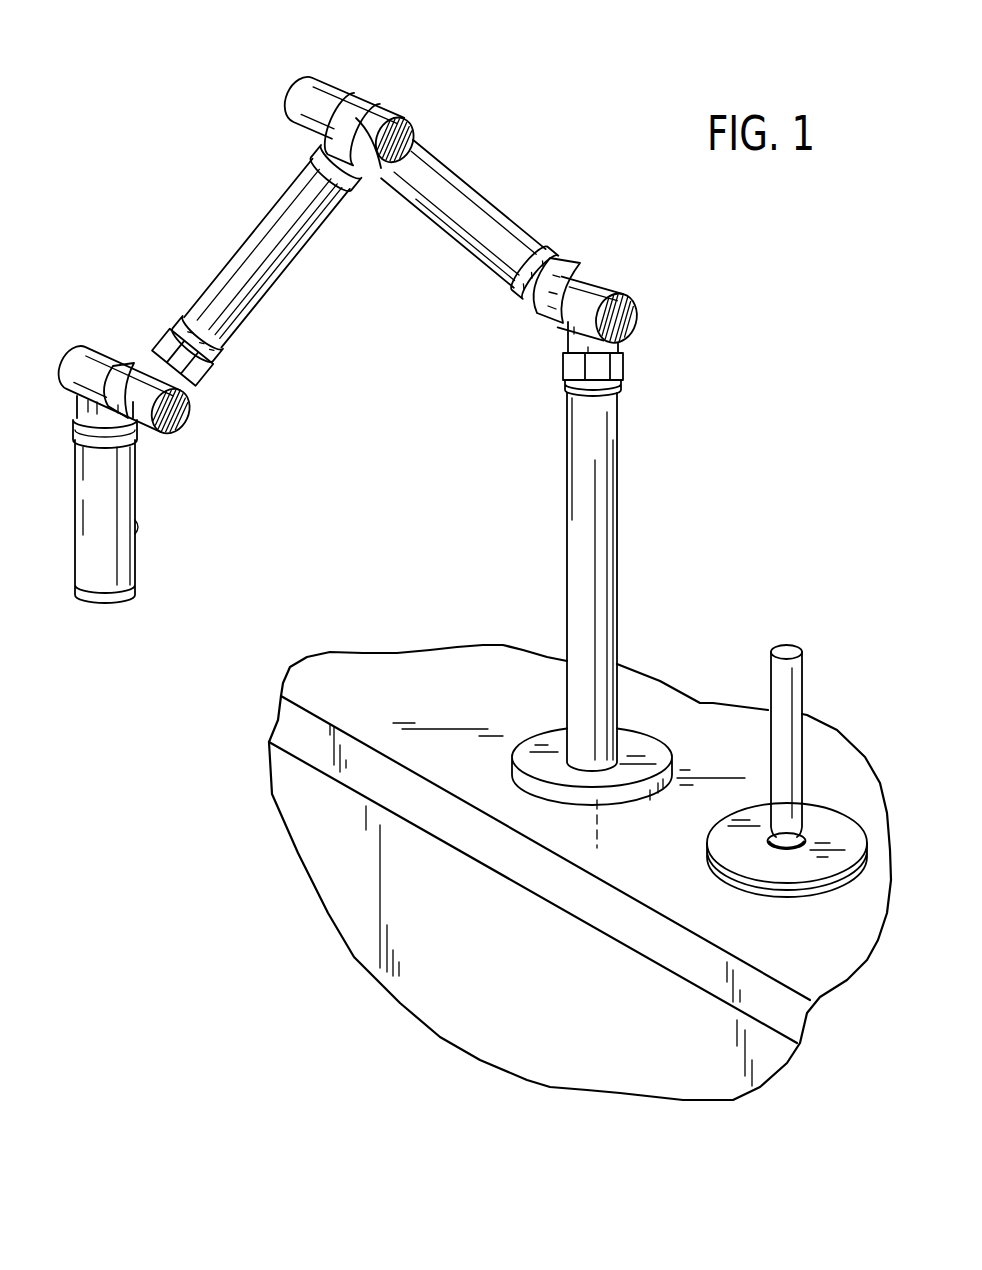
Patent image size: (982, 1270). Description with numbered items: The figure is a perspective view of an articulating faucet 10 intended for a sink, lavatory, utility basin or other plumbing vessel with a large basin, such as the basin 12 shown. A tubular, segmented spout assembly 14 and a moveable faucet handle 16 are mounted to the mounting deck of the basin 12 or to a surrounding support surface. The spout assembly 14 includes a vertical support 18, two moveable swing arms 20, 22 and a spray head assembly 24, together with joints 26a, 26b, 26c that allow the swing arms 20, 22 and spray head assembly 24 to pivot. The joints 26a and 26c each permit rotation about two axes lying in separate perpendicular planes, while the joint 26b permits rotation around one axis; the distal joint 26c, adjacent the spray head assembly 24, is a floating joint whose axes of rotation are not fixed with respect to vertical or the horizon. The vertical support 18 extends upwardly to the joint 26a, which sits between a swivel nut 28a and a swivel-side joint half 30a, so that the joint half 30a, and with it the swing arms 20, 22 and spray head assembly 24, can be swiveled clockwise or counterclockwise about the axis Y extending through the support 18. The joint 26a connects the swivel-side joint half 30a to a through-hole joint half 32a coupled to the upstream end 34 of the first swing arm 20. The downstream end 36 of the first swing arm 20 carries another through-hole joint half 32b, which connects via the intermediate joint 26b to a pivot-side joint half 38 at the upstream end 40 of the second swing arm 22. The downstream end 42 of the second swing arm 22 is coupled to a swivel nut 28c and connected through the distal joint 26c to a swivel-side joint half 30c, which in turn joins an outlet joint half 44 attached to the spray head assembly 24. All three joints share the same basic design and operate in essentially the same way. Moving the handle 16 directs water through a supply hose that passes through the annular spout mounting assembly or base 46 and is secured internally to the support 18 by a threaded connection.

The articulating faucet 10 is at (355, 324).
The basin 12 is at (531, 980).
The spout assembly 14 is at (607, 563).
The faucet handle 16 is at (830, 680).
The vertical support 18 is at (559, 546).
The first swing arm 20 is at (444, 247).
The second swing arm 22 is at (224, 223).
The spray head assembly 24 is at (98, 567).
The joint 26a is at (618, 277).
The intermediate joint 26b is at (335, 133).
The distal joint 26c is at (135, 373).
The swivel nut 28a is at (568, 365).
The swivel nut 28c is at (208, 372).
The swivel-side joint half 30a is at (618, 290).
The swivel-side joint half 30c is at (180, 420).
The through-hole joint half 32a is at (567, 265).
The through-hole joint half 32b is at (317, 83).
The upstream end 34 is at (505, 298).
The downstream end 36 is at (398, 207).
The pivot-side joint half 38 is at (380, 115).
The upstream end 40 is at (270, 180).
The downstream end 42 is at (175, 290).
The outlet joint half 44 is at (83, 362).
The spout mounting assembly 46 is at (637, 737).
The axis Y is at (598, 836).